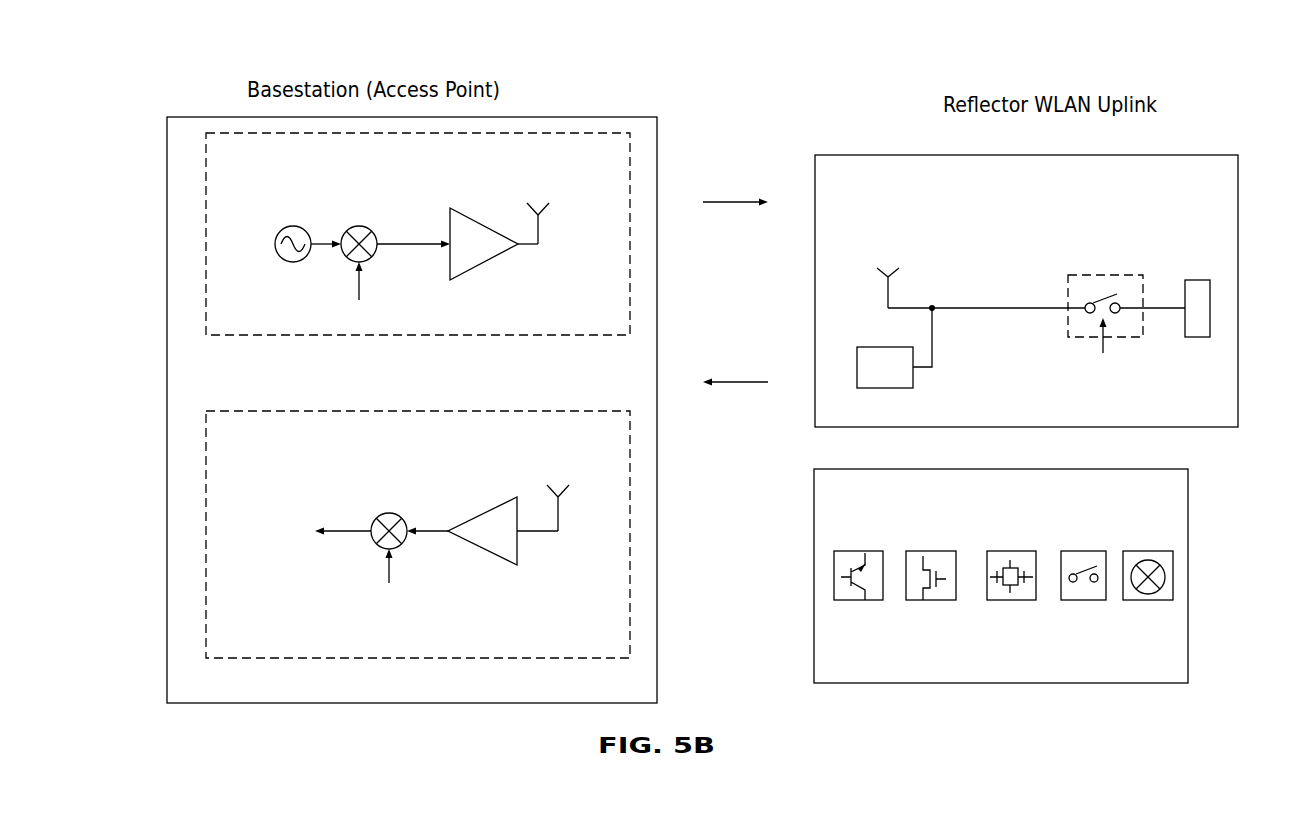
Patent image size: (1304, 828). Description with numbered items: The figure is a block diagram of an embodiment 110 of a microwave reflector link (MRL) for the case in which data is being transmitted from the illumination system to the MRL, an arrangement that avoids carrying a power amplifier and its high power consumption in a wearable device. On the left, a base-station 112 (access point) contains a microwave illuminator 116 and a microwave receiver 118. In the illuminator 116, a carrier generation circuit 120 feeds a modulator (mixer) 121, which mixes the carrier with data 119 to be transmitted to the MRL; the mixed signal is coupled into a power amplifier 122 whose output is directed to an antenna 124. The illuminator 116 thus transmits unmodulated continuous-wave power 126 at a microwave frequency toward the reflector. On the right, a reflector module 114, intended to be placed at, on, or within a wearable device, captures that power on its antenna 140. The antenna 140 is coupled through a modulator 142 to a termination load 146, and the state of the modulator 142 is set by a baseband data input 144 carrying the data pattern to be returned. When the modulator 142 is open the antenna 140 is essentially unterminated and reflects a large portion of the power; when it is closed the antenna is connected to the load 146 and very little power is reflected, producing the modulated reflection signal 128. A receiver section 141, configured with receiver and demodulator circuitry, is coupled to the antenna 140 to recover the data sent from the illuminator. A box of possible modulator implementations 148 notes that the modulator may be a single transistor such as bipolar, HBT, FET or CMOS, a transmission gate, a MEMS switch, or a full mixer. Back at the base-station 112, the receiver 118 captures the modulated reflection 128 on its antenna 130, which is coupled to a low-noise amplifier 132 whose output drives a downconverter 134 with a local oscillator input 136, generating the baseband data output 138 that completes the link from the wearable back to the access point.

The microwave reflector link embodiment 110 is at (116, 55).
The base-station 112 is at (167, 240).
The reflector module 114 is at (1193, 153).
The microwave illuminator 116 is at (556, 339).
The microwave receiver 118 is at (283, 410).
The data 119 is at (332, 318).
The carrier generation circuit 120 is at (283, 257).
The modulator (mixer) 121 is at (366, 227).
The power amplifier 122 is at (482, 225).
The antenna 124 is at (542, 250).
The continuous-wave power 126 is at (722, 200).
The modulated reflection signal 128 is at (725, 378).
The antenna 130 is at (533, 532).
The low-noise amplifier 132 is at (483, 549).
The downconverter 134 is at (387, 512).
The local oscillator (LO) input 136 is at (342, 608).
The baseband data output 138 is at (350, 528).
The antenna 140 is at (887, 292).
The receiver section 141 is at (887, 390).
The modulator 142 is at (1073, 338).
The baseband data input 144 is at (1153, 373).
The termination load 146 is at (1200, 280).
The modulator implementations 148 is at (1188, 510).